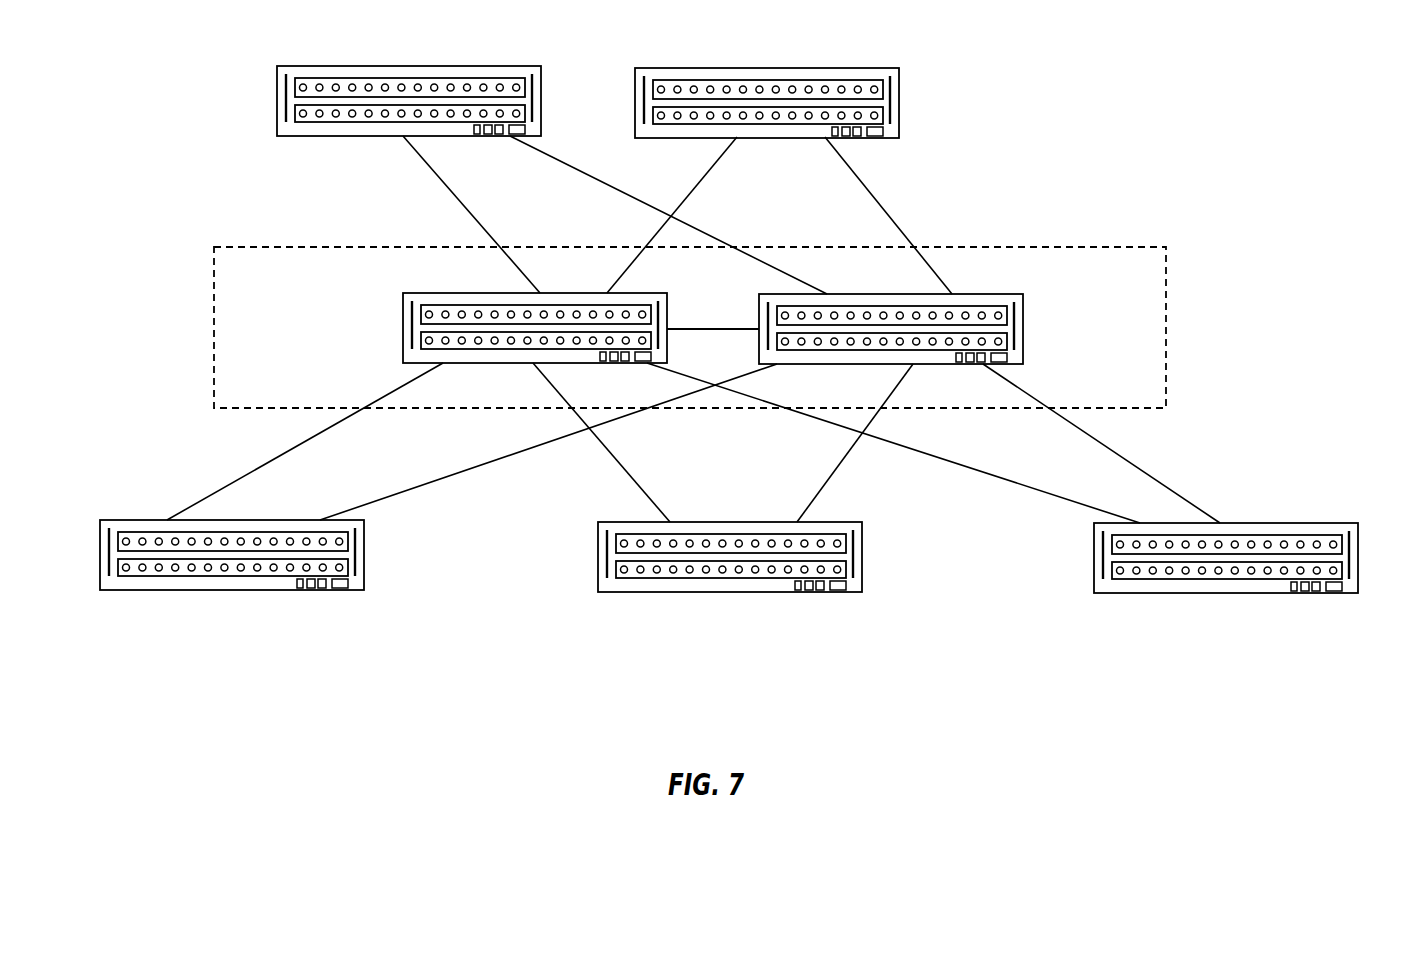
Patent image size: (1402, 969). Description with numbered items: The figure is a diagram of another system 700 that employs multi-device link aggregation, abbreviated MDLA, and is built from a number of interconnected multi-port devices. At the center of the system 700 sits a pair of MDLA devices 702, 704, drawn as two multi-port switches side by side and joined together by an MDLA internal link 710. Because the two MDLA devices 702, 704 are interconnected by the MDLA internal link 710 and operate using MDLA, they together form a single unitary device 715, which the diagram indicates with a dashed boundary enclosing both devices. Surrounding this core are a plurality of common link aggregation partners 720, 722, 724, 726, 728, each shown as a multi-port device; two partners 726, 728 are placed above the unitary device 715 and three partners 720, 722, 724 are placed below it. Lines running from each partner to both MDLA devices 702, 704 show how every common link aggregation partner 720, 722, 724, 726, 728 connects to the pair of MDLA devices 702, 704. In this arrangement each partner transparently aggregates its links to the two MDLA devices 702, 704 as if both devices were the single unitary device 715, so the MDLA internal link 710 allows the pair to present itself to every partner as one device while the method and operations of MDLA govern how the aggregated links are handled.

The system 700 is at (214, 104).
The MDLA device 702 is at (643, 293).
The MDLA device 704 is at (997, 294).
The MDLA internal link 710 is at (687, 329).
The single unitary device 715 is at (1145, 290).
The common link aggregation partner 720 is at (334, 589).
The common link aggregation partner 722 is at (836, 591).
The common link aggregation partner 724 is at (1333, 593).
The common link aggregation partner 726 is at (515, 67).
The common link aggregation partner 728 is at (875, 69).